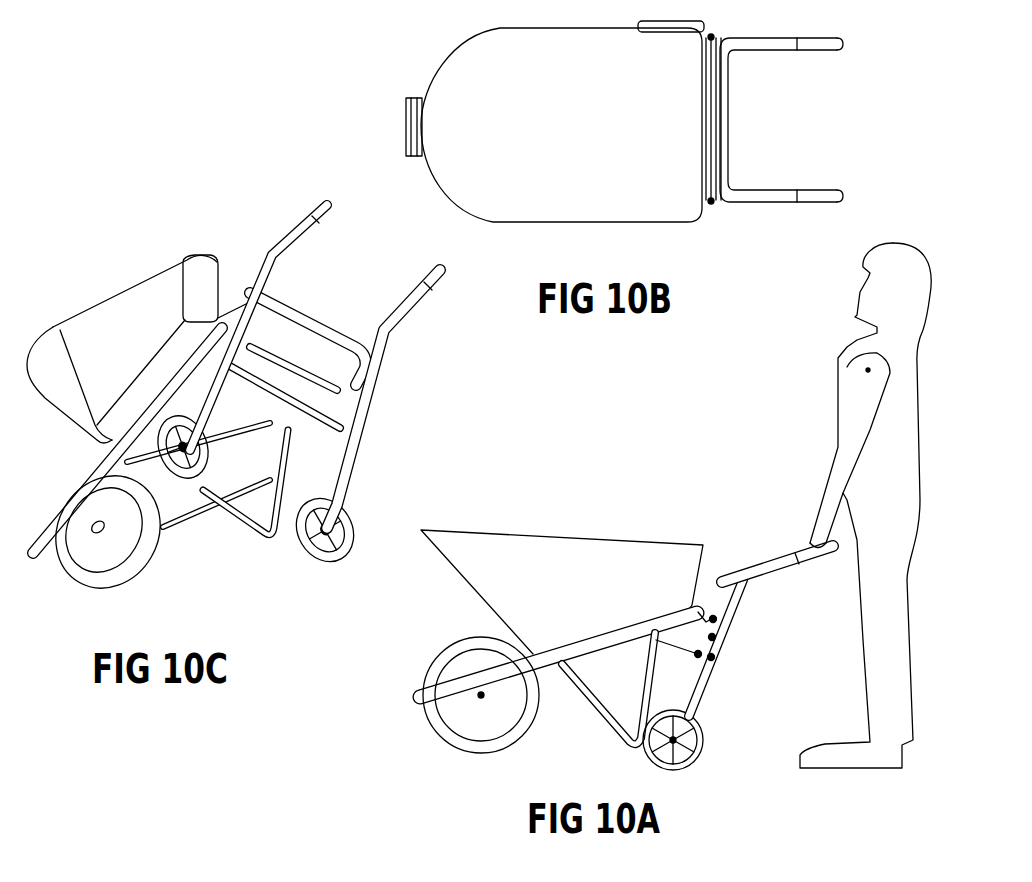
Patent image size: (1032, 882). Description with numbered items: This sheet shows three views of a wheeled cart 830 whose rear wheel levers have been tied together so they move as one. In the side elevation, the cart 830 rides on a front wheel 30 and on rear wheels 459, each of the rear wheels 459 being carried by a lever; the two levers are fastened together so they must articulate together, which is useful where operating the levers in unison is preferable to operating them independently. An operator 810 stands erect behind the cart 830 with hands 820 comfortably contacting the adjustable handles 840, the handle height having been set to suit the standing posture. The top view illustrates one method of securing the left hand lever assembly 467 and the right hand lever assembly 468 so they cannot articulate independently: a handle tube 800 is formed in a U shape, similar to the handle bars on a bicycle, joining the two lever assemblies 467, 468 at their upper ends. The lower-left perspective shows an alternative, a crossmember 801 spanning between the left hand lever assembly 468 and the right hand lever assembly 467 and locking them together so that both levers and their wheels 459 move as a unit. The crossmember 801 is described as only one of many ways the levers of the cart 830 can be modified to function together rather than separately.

In FIG. 10B, the cart 830 is at (403, 93).
In FIG. 10C, the cart 830 is at (96, 293).
In FIG. 10A, the cart 830 is at (460, 595).
In FIG. 10B, the handle tube 800 is at (740, 118).
In FIG. 10C, the crossmember 801 is at (302, 306).
In FIG. 10C, the lever assembly 468 is at (222, 294).
In FIG. 10C, the lever assembly 467 is at (397, 362).
In FIG. 10A, the front wheel 30 is at (404, 741).
In FIG. 10A, the wheels 459 is at (697, 780).
In FIG. 10A, the adjustable handles 840 is at (765, 585).
In FIG. 10A, the hands 820 is at (804, 520).
In FIG. 10A, the operator 810 is at (827, 374).